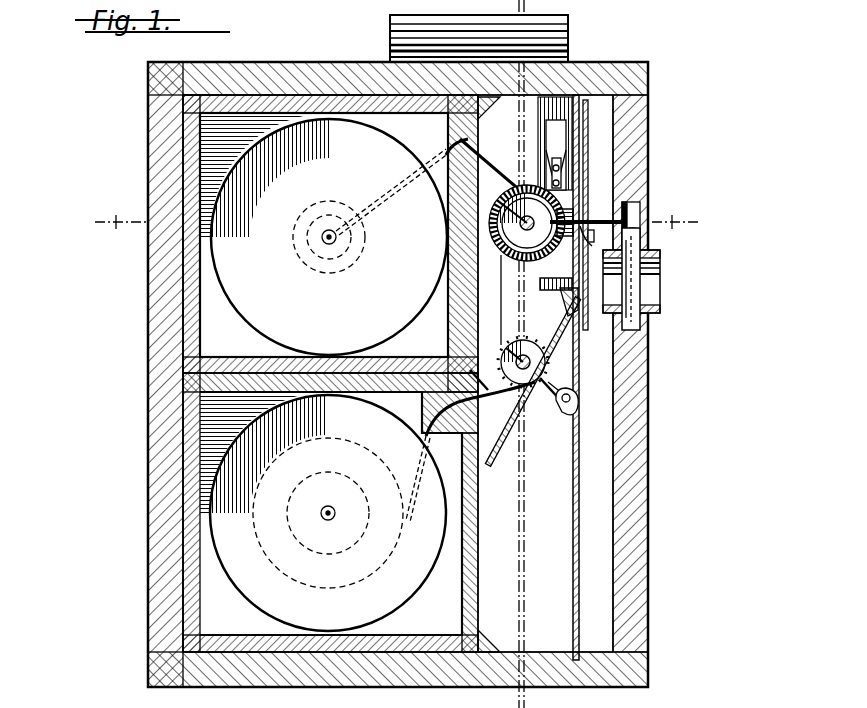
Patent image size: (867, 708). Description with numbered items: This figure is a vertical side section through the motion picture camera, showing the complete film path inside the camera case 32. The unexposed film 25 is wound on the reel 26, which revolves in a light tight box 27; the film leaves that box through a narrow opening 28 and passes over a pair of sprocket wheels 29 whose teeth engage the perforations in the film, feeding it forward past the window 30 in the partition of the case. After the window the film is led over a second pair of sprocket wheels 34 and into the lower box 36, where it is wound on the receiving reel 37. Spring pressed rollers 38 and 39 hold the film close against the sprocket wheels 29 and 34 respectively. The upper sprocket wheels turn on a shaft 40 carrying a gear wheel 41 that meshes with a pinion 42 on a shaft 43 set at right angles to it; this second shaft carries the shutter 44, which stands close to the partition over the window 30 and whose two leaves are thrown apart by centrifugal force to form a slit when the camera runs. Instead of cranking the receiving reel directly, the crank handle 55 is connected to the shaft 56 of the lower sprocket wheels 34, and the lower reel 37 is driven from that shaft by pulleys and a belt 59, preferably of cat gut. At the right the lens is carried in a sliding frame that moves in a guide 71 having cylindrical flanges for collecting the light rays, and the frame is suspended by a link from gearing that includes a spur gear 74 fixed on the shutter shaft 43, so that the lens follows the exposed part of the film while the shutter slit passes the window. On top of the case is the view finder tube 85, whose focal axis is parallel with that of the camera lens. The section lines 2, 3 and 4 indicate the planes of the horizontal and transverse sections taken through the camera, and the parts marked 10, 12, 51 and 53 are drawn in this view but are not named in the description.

The section line 2— 2 is at (387, 224).
The section line 3— 3 is at (528, 8).
The section line 4— 4 is at (516, 8).
The shaft 10 is at (636, 292).
The pin 12 is at (640, 234).
The unexposed film 25 is at (440, 158).
The reel 26 is at (263, 312).
The light tight box 27 is at (193, 350).
The narrow opening 28 is at (455, 146).
The sprocket wheels 29 is at (518, 252).
The window 30 is at (576, 296).
The camera case 32 is at (632, 82).
The sprocket wheels 34 is at (538, 400).
The lower box 36 is at (470, 548).
The receiving reel 37 is at (408, 588).
The spring pressed rollers 38 is at (572, 204).
The spring pressed rollers 39 is at (572, 412).
The shaft 40 is at (507, 208).
The gear wheel 41 is at (509, 270).
The pinion 42 is at (578, 221).
The shaft 43 is at (588, 232).
The shutter 44 is at (580, 152).
The wall 51 is at (575, 472).
The block 53 is at (574, 282).
The crank handle 55 is at (480, 399).
The shaft 56 is at (516, 355).
The belt 59 is at (482, 456).
The guide 71 is at (650, 306).
The spur gear 74 is at (630, 212).
The tube 85 is at (565, 40).